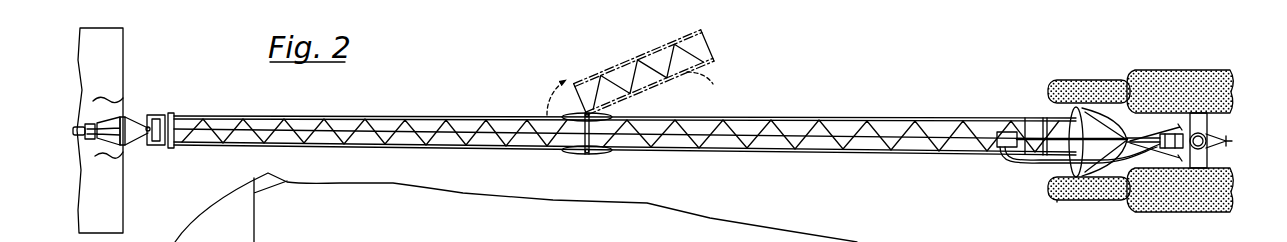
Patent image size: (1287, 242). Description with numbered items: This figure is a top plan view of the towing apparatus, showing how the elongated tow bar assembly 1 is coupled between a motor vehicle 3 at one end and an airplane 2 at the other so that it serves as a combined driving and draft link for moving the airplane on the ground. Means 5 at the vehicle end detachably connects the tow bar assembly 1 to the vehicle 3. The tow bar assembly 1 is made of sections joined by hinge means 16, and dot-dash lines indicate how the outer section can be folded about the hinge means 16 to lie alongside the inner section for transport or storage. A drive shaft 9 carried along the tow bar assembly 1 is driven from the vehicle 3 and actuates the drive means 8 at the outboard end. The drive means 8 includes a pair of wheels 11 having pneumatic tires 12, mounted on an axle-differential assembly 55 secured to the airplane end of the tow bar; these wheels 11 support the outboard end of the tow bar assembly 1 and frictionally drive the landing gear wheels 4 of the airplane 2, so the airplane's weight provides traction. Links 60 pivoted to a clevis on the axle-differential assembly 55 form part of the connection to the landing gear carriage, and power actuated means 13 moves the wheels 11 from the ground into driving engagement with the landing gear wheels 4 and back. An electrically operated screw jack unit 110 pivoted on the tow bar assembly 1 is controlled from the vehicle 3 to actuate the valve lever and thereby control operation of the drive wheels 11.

The tow bar assembly 1 is at (625, 102).
The airplane 2 is at (1191, 71).
The motor vehicle 3 is at (110, 197).
The landing gear wheels 4 is at (1170, 203).
The means for detachably connecting the assembly with the vehicle 5 is at (162, 108).
The drive means 8 is at (1077, 200).
The drive shaft 9 is at (770, 138).
The wheels 11 is at (1046, 92).
The pneumatic tires 12 is at (1077, 81).
The means for moving the wheels into driving engagement 13 is at (1177, 147).
The hinge means 16 is at (605, 113).
The axle-differential assembly 55 is at (1090, 110).
The links 60 is at (1180, 125).
The screw jack unit 110 is at (1008, 147).